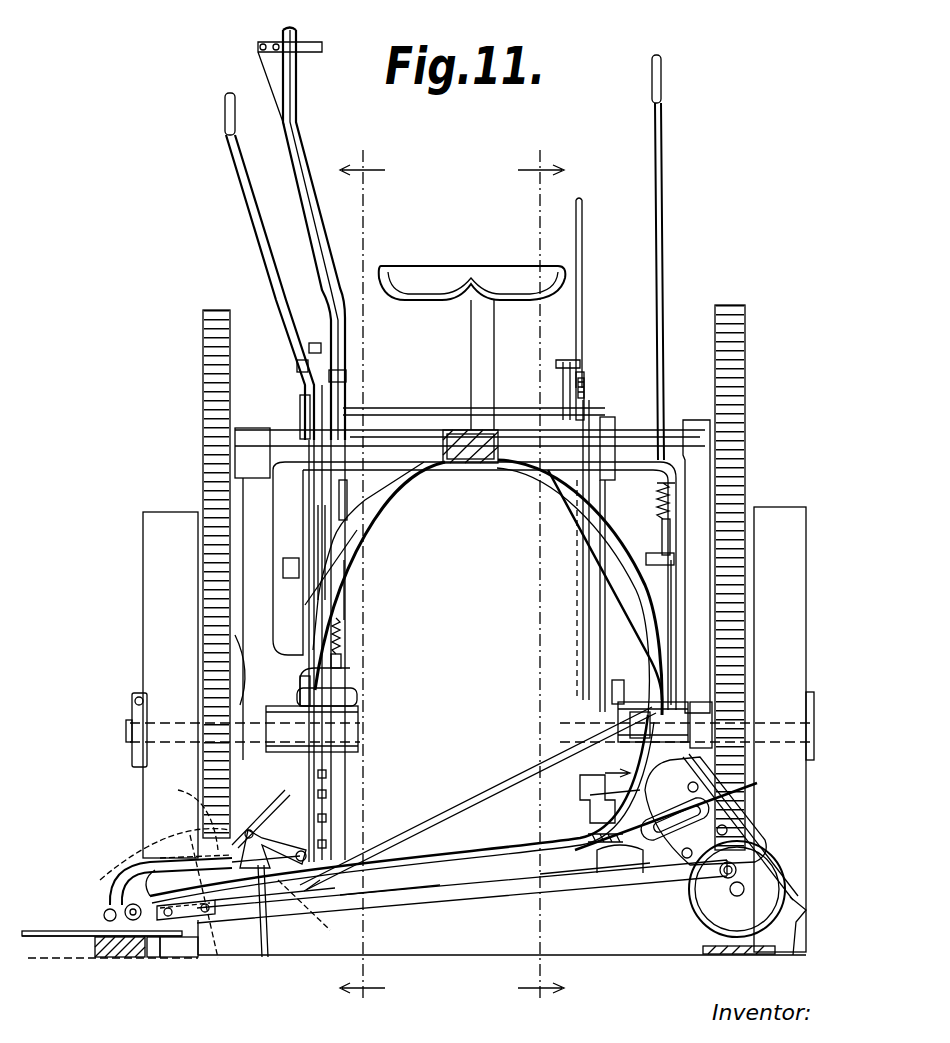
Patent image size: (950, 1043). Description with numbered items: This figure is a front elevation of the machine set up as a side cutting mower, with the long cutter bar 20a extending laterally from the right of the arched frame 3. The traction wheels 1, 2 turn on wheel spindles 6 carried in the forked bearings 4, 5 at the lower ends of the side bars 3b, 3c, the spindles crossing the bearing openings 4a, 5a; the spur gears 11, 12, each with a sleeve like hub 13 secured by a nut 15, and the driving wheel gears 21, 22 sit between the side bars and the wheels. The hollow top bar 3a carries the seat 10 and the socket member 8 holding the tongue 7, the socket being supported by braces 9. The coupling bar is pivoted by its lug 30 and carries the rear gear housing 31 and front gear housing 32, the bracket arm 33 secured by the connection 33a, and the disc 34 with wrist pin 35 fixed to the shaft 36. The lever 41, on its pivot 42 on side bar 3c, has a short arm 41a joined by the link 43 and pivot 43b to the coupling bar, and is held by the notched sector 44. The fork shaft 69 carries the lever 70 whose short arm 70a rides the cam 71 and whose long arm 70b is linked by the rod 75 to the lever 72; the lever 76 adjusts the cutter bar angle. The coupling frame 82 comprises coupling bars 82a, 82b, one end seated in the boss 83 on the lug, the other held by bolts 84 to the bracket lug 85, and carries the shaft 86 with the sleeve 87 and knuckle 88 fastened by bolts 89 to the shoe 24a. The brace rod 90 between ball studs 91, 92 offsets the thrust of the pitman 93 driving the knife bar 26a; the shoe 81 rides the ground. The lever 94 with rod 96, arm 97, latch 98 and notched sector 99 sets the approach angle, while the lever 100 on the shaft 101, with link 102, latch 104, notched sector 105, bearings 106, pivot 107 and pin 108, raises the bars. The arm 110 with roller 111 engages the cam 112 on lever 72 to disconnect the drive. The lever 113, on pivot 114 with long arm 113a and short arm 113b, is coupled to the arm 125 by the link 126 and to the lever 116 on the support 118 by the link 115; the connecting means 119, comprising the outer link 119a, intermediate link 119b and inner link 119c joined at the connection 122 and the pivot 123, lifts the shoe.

The traction wheel 1 is at (160, 600).
The traction wheel 2 is at (766, 520).
The arched frame 3 is at (274, 424).
The top bar 3a is at (400, 450).
The side bar 3b is at (250, 490).
The side bar 3c is at (692, 492).
The forked bearing 4 is at (343, 690).
The bearing opening 4a is at (345, 704).
The forked bearing 5 is at (584, 668).
The bearing opening 5a is at (612, 690).
The wheel spindle 6 is at (360, 728).
The tongue 7 is at (460, 466).
The socket member 8 is at (480, 464).
The brace 9 is at (368, 540).
The seat 10 is at (449, 268).
The spur gear 11 is at (235, 665).
The spur gear 12 is at (757, 665).
The sleeve like hub 13 is at (541, 581).
The nut 15 is at (132, 740).
The long cutter bar 20a is at (38, 928).
The driving wheel gear 21 is at (205, 368).
The driving wheel gear 22 is at (744, 390).
The shoe 24a is at (126, 958).
The knife bar 26a is at (60, 938).
The lug 30 is at (655, 850).
The gear housing 31 is at (582, 785).
The gear housing 32 is at (740, 808).
The bracket arm 33 is at (680, 848).
The securing connection 33a is at (725, 792).
The disc 34 is at (715, 898).
The wrist pin 35 is at (795, 946).
The shaft 36 is at (737, 890).
The lever 41 is at (662, 266).
The short arm 41a is at (628, 604).
The pivot 42 is at (658, 556).
The link 43 is at (660, 585).
The pivot 43b is at (735, 745).
The notched sector 44 is at (660, 525).
The shaft 69 is at (600, 796).
The lever 70 is at (565, 762).
The short arm 70a is at (612, 780).
The long arm 70b is at (595, 716).
The cam 71 is at (615, 847).
The lever 72 is at (583, 318).
The rod 75 is at (662, 558).
The lever 76 is at (598, 592).
The shoe 81 is at (742, 954).
The coupling frame 82 is at (396, 825).
The coupling bar 82a is at (466, 808).
The coupling bar 82b is at (326, 820).
The boss 83 is at (650, 708).
The bolt 84 is at (326, 774).
The bracket lug 85 is at (326, 795).
The shaft 86 is at (298, 902).
The sleeve 87 is at (240, 906).
The knuckle 88 is at (178, 950).
The bolt 89 is at (152, 958).
The brace rod 90 is at (466, 862).
The ball stud 91 is at (565, 874).
The ball stud 92 is at (98, 878).
The pitman 93 is at (398, 895).
The lever 94 is at (330, 556).
The rod 96 is at (255, 820).
The arm 97 is at (252, 838).
The latch 98 is at (338, 668).
The notched sector 99 is at (340, 682).
The lever 100 is at (312, 214).
The shaft 101 is at (497, 408).
The link 102 is at (358, 532).
The latch 104 is at (346, 372).
The notched sector 105 is at (347, 390).
The bearing 106 is at (612, 460).
The pivot 107 is at (326, 845).
The pin 108 is at (304, 438).
The arm 110 is at (563, 388).
The roller 111 is at (583, 372).
The cam 112 is at (585, 392).
The lever 113 is at (298, 520).
The long arm 113a is at (264, 238).
The short arm 113b is at (346, 592).
The pivot 114 is at (285, 565).
The link 115 is at (302, 694).
The lever 116 is at (284, 860).
The support 118 is at (305, 930).
The connecting means 119 is at (117, 858).
The outer link 119a is at (120, 896).
The intermediate link 119b is at (160, 860).
The inner link 119c is at (260, 930).
The connection 122 is at (178, 792).
The pivot 123 is at (322, 917).
The arm 125 is at (313, 343).
The link 126 is at (297, 364).